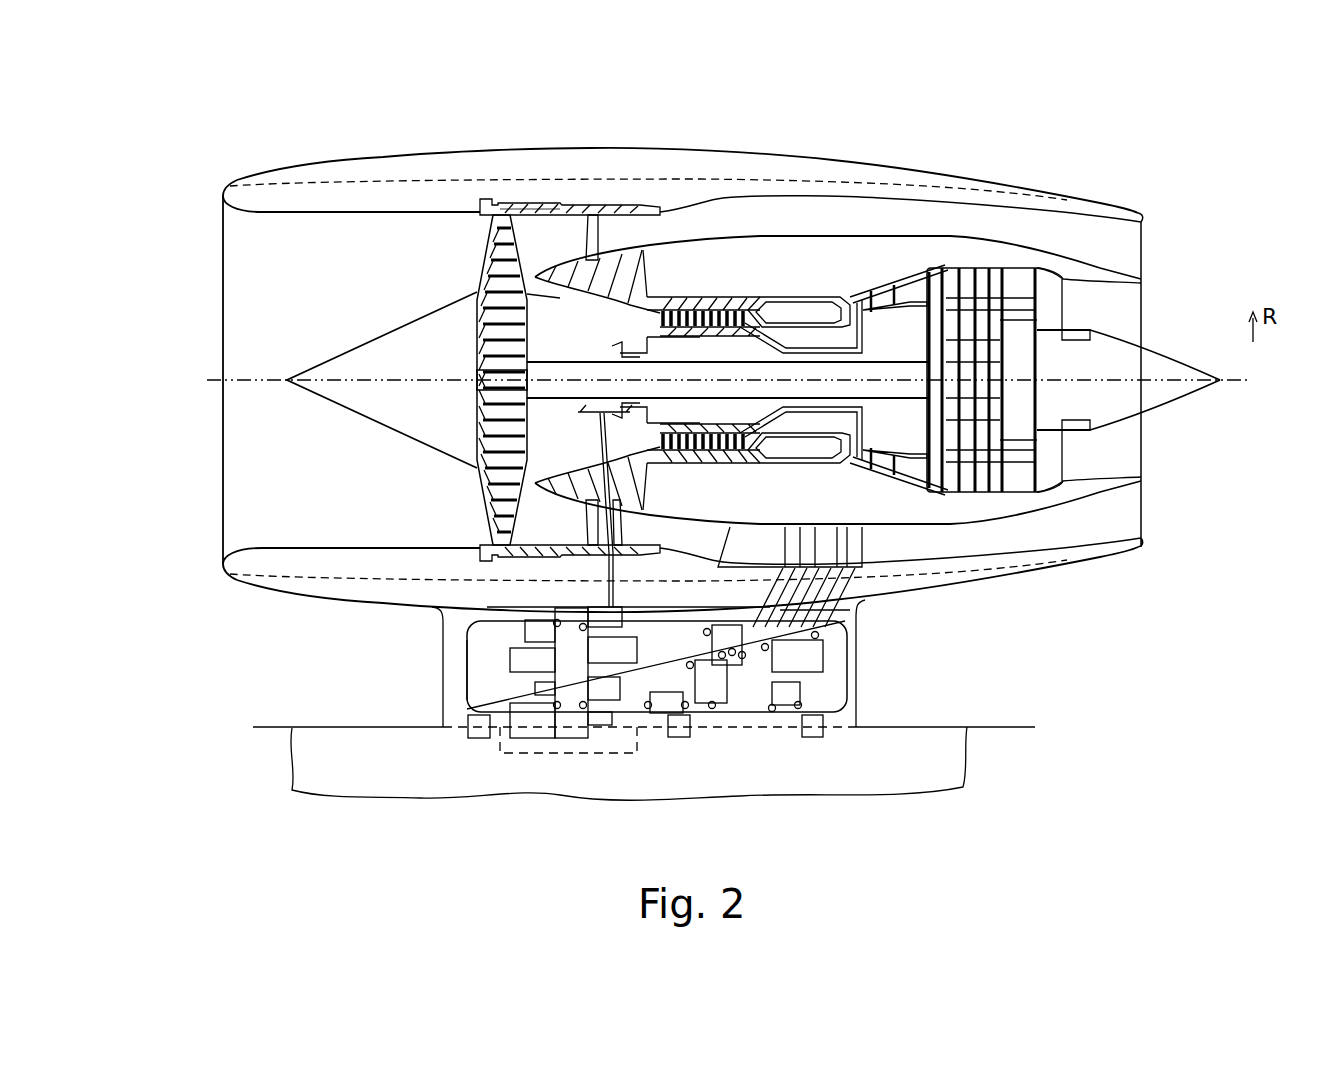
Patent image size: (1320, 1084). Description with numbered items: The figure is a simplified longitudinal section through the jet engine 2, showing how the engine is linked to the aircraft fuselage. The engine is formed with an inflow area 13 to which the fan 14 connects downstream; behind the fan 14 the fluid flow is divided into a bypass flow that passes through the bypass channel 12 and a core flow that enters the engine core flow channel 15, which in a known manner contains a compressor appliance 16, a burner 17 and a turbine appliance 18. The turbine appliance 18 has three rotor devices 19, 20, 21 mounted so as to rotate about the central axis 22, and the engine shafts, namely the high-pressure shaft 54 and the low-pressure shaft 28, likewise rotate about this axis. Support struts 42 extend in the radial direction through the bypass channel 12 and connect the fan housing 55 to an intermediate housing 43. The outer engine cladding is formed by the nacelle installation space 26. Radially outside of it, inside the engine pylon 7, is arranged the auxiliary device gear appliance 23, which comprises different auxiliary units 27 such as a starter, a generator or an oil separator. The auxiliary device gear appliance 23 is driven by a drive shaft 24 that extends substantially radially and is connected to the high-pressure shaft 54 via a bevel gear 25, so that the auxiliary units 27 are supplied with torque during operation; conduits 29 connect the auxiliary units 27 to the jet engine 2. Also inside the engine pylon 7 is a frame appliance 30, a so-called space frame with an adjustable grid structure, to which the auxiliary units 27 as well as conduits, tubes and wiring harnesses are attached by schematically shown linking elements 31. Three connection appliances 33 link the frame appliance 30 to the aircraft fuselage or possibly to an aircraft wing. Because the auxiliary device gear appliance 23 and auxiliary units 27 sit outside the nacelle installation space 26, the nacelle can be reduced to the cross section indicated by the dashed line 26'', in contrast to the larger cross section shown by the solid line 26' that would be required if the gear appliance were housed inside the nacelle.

The jet engine 2 is at (238, 164).
The dashed line 26'' is at (648, 135).
The solid line 26' is at (351, 141).
The fan 14 is at (486, 204).
The fan housing 55 is at (530, 204).
The bevel gear 25 is at (548, 413).
The support strut 42 is at (572, 230).
The engine core flow channel 15 is at (593, 236).
The intermediate housing 43 is at (642, 250).
The high-pressure shaft 54 is at (721, 290).
The bypass channel 12 is at (725, 203).
The compressor appliance 16 is at (800, 310).
The burner 17 is at (840, 388).
The central axis 22 is at (972, 258).
The turbine appliance 18 is at (965, 265).
The rotor device 19 is at (1000, 327).
The rotor device 20 is at (990, 375).
The rotor device 21 is at (985, 430).
The inflow area 13 is at (237, 295).
The nacelle installation space 26 is at (629, 637).
The drive shaft 24 is at (593, 500).
The linking elements 31 is at (590, 607).
The auxiliary device gear appliance 23 is at (496, 658).
The frame appliance 30 is at (468, 679).
The low-pressure shaft 28 is at (895, 425).
The conduits 29 is at (853, 558).
The engine pylon 7 is at (856, 660).
The connection appliance 33 is at (478, 738).
The auxiliary units 27 is at (497, 740).